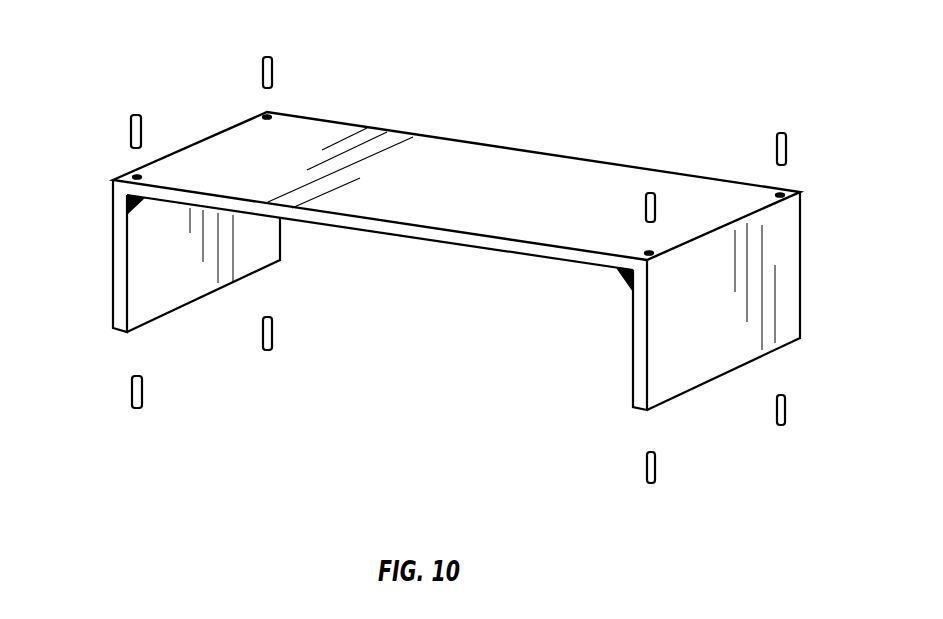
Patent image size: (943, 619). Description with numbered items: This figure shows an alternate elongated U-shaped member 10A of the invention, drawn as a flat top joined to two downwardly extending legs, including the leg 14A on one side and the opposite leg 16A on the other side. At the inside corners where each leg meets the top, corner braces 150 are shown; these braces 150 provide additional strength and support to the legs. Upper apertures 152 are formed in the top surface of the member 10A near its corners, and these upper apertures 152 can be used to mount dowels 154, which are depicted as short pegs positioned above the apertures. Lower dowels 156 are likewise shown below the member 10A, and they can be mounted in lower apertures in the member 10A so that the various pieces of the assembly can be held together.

The elongated U-shaped member 10A is at (482, 125).
The leg 14A is at (117, 288).
The right leg panel 16A is at (640, 340).
The corner brace 150 is at (134, 199).
The upper aperture 152 is at (134, 175).
The dowel 154 is at (131, 126).
The lower dowel 156 is at (142, 393).